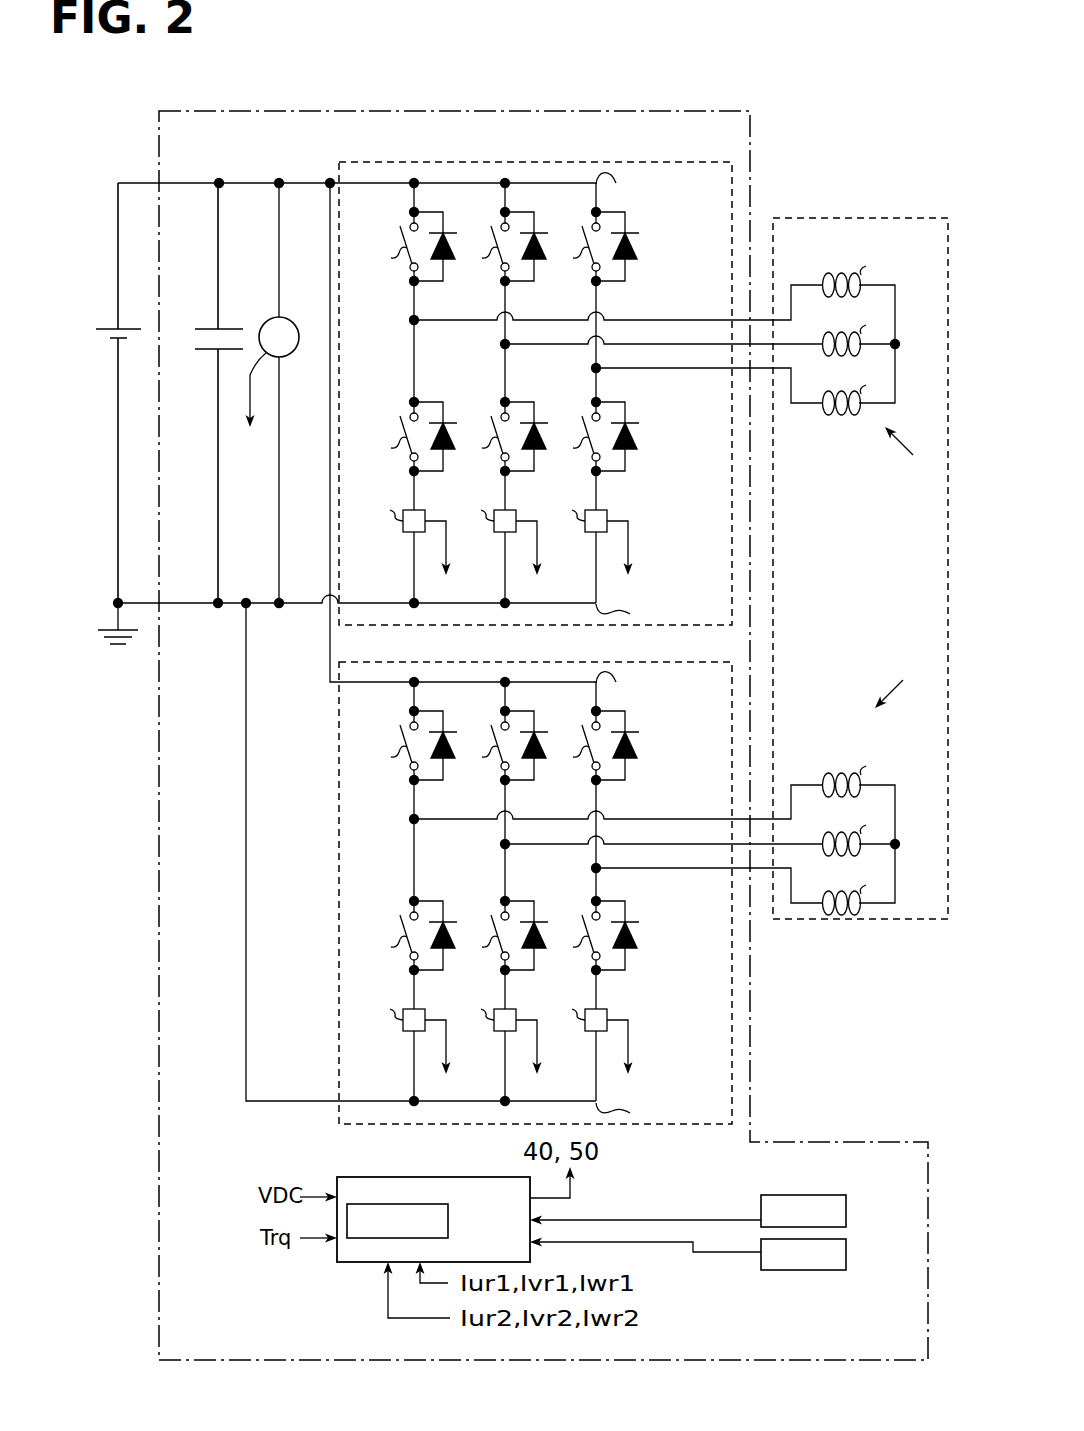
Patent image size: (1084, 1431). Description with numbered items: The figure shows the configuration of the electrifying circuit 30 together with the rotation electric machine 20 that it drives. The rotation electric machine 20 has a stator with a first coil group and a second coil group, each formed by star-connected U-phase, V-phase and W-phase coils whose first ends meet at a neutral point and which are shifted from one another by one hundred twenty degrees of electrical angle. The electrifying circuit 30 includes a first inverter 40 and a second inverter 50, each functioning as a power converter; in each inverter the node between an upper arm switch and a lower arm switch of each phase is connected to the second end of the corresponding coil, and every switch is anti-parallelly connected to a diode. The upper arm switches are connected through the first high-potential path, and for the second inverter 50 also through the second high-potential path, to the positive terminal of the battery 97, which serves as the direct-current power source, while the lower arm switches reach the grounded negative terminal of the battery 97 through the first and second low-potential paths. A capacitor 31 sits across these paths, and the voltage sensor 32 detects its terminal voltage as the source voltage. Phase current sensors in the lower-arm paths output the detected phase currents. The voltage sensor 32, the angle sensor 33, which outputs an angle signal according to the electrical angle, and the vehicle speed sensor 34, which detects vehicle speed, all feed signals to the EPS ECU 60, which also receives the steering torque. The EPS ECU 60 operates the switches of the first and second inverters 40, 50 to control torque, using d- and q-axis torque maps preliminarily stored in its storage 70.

The rotation electric machine 20 is at (802, 213).
The electrifying circuit 30 is at (751, 148).
The capacitor 31 is at (204, 328).
The voltage sensor 32 is at (266, 320).
The angle sensor 33 is at (831, 1195).
The vehicle speed sensor 34 is at (847, 1254).
The first inverter 40 is at (368, 157).
The second inverter 50 is at (368, 657).
The EPS ECU 60 is at (433, 1198).
The storage 70 is at (377, 1213).
The battery 97 is at (103, 328).